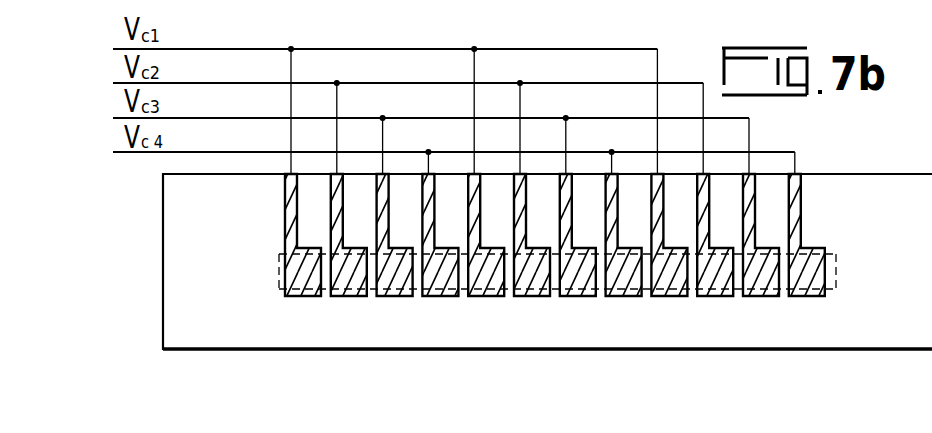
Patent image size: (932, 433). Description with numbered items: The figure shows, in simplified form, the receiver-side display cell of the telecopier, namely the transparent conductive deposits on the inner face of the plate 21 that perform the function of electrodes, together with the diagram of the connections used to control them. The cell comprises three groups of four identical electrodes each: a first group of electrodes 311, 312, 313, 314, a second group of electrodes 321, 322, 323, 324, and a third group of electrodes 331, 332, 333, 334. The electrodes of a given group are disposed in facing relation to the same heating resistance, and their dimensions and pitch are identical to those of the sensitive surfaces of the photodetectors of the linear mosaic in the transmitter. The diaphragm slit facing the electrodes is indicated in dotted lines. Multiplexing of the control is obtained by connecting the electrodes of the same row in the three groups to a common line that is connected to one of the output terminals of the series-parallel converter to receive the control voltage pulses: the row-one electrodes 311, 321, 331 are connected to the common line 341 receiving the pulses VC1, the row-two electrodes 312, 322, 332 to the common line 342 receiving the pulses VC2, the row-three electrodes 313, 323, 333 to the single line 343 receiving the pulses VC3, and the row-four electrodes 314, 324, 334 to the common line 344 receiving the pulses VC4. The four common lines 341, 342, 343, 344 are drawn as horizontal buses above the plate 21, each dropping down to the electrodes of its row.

The plate 21 is at (886, 184).
The electrode 311 is at (303, 289).
The electrode 312 is at (349, 289).
The electrode 313 is at (395, 289).
The electrode 314 is at (441, 289).
The electrode 321 is at (487, 289).
The electrode 322 is at (533, 289).
The electrode 323 is at (580, 289).
The electrode 324 is at (626, 289).
The electrode 331 is at (672, 289).
The electrode 332 is at (718, 289).
The electrode 333 is at (764, 289).
The electrode 334 is at (812, 289).
The common line 341 is at (218, 35).
The common line 342 is at (218, 69).
The common line 343 is at (218, 104).
The common line 344 is at (218, 138).